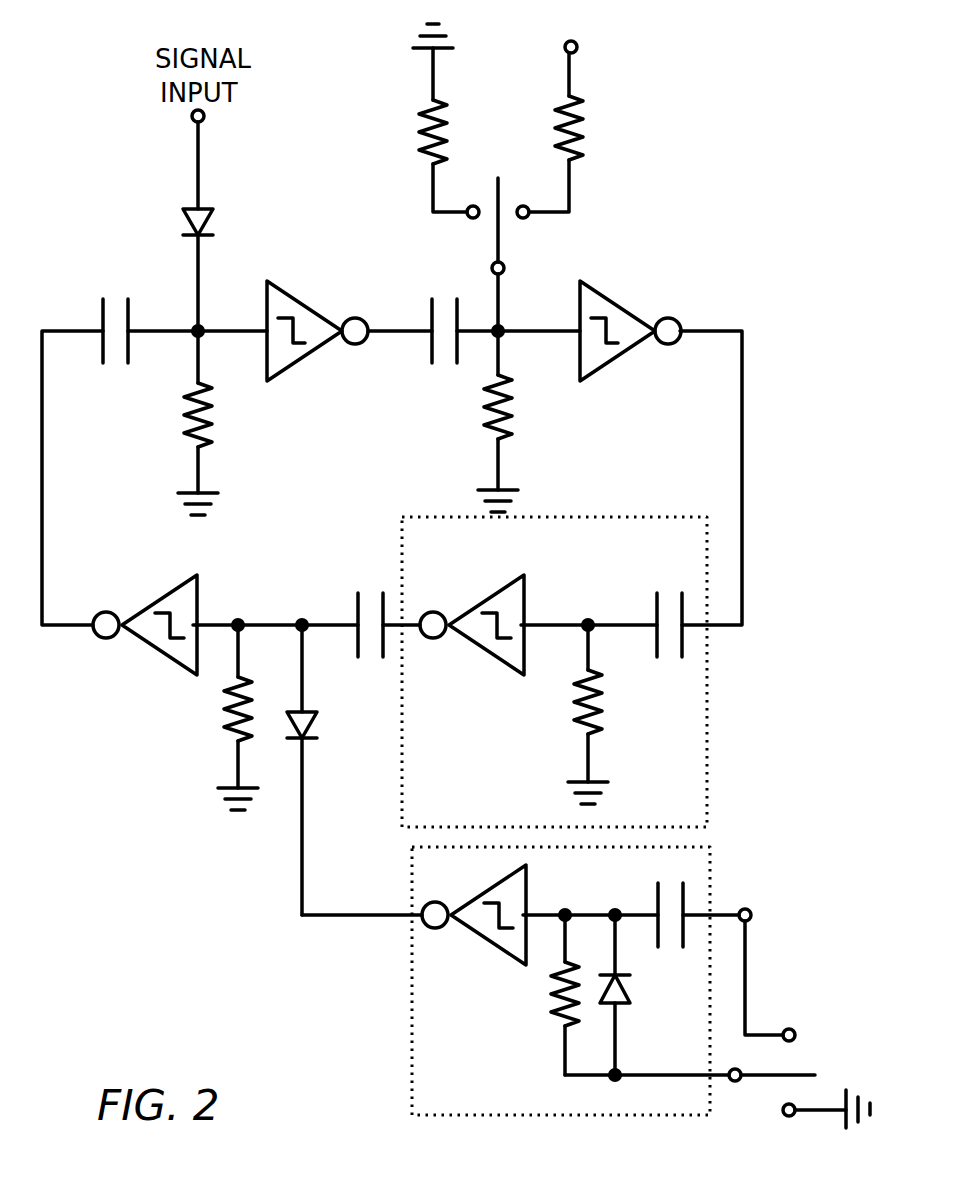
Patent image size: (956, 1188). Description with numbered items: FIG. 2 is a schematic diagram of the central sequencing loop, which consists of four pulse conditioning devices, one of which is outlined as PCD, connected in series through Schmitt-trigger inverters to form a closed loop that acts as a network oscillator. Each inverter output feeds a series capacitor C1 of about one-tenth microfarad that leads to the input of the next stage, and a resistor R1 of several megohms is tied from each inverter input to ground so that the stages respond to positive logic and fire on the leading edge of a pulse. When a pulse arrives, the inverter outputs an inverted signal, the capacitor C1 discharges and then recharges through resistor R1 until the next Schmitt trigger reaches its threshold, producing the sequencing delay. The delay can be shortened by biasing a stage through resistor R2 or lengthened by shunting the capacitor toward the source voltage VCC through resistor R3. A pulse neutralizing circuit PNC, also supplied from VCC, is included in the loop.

The capacitor C1 is at (391, 608).
The resistor R1 is at (389, 703).
The resistor R2 is at (425, 121).
The resistor R3 is at (568, 135).
The source voltage VCC is at (687, 530).
The pulse conditioning device (PDC) PCD is at (707, 737).
The pulse neutralizing circuit PNC is at (412, 983).